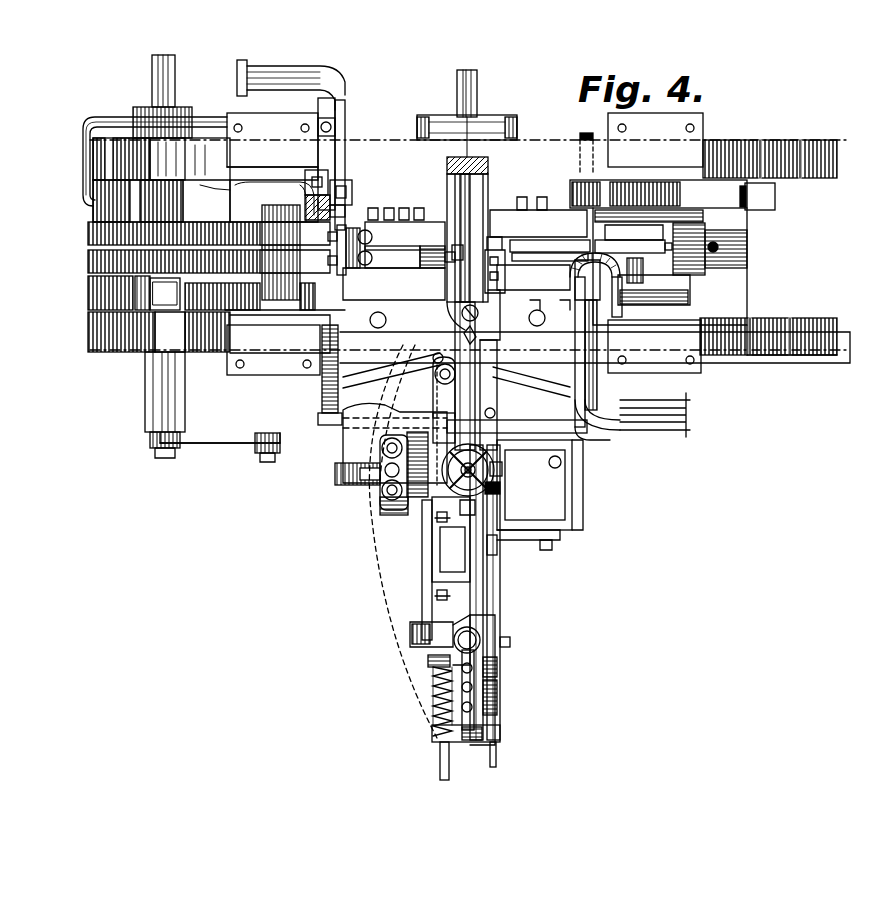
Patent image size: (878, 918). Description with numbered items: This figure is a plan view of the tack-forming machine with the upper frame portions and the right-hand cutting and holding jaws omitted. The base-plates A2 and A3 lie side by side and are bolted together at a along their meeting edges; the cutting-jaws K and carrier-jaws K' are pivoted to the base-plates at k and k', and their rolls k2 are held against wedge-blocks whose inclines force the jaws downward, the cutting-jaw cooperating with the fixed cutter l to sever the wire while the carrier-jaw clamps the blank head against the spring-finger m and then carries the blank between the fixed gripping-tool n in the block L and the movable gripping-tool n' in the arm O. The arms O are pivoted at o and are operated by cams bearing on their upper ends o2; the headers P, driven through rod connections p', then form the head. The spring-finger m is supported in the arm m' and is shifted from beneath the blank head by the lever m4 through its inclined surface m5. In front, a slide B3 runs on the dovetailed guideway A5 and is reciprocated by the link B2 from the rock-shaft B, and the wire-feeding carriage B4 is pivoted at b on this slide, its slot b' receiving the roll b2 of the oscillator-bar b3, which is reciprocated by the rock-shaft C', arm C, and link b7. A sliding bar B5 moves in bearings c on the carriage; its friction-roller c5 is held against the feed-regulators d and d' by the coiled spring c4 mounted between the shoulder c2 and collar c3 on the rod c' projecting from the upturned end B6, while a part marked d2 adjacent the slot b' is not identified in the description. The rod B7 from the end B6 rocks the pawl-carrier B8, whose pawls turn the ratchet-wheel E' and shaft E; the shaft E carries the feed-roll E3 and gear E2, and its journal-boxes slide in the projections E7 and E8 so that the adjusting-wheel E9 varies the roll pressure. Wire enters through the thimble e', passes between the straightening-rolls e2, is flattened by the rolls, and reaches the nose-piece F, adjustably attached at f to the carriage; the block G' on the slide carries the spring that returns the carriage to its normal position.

The rock-shaft B is at (477, 90).
The bolts a is at (515, 122).
The nose-piece F is at (476, 303).
The attachment point of nose-piece f is at (462, 318).
The rock-shaft C' is at (150, 81).
The arm m' is at (155, 150).
The jaw pivot k is at (465, 169).
The base-plate A2 is at (375, 128).
The arm O is at (454, 253).
The header P is at (330, 62).
The spring-finger m is at (312, 152).
The inclined surface m5 is at (308, 172).
The lever m4 is at (353, 182).
The rod connection p' is at (466, 243).
The carrier-jaw K' is at (209, 233).
The cutting-jaw K is at (209, 261).
The roll k2 is at (262, 236).
The fixed cutter l is at (406, 245).
The upper end of arm o2 is at (788, 200).
The jaw pivot k' is at (464, 329).
The arm C is at (151, 405).
The link b7 is at (230, 445).
The oscillator-bar b3 is at (320, 428).
The pivot of arm o is at (586, 145).
The base-plate A3 is at (540, 140).
The block L is at (465, 255).
The fixed gripping-tool n is at (550, 249).
The movable gripping-tool n' is at (633, 245).
The feed-regulator d' is at (531, 381).
The dovetailed guideway A5 is at (583, 495).
The slide B3 is at (560, 522).
The link B2 is at (520, 540).
The pawl-carrier B8 is at (350, 445).
The upward projection of carriage E7 is at (360, 480).
The gear E2 is at (405, 500).
The ratchet-wheel E' is at (388, 485).
The shaft E is at (478, 470).
The feed-roll E3 is at (498, 478).
The upward projection of carriage E8 is at (504, 492).
The adjusting-wheel E9 is at (470, 515).
The wire-feeding carriage B4 is at (472, 576).
The sliding bar B5 is at (440, 577).
The rod B7 is at (427, 555).
The bearing c is at (414, 563).
The upturned end of sliding bar B6 is at (427, 648).
The carriage pivot b is at (482, 636).
The block G' is at (491, 670).
The collar c3 is at (428, 662).
The coiled spring c4 is at (433, 696).
The shoulder c2 is at (433, 733).
The rod c' is at (434, 761).
The straightening-roll e2 is at (497, 667).
The thimble e' is at (503, 753).
The feed-regulator d is at (391, 373).
The pin d2 is at (435, 352).
The slot b' is at (436, 421).
The friction-roller c5 is at (435, 374).
The roll b2 is at (448, 419).